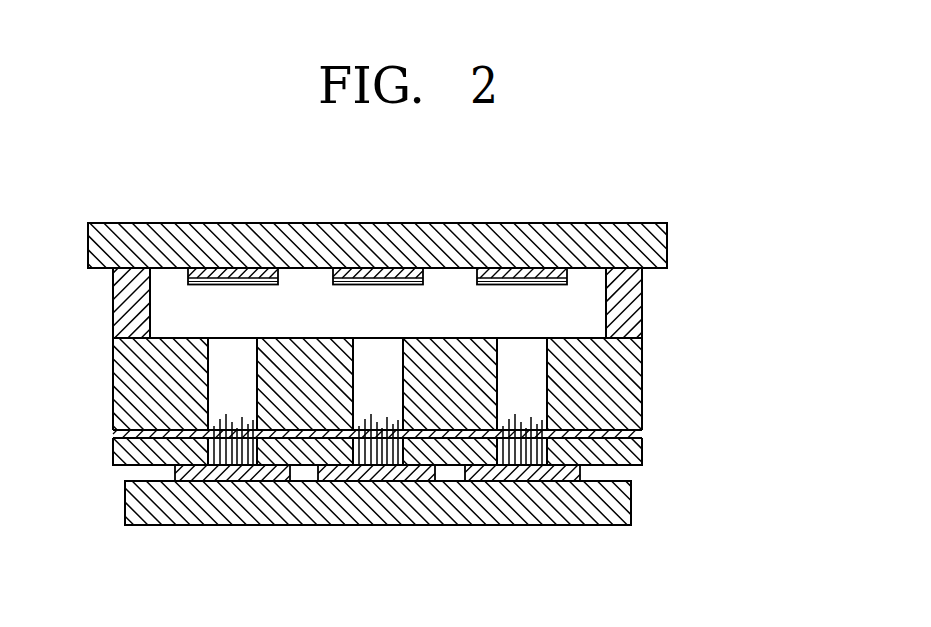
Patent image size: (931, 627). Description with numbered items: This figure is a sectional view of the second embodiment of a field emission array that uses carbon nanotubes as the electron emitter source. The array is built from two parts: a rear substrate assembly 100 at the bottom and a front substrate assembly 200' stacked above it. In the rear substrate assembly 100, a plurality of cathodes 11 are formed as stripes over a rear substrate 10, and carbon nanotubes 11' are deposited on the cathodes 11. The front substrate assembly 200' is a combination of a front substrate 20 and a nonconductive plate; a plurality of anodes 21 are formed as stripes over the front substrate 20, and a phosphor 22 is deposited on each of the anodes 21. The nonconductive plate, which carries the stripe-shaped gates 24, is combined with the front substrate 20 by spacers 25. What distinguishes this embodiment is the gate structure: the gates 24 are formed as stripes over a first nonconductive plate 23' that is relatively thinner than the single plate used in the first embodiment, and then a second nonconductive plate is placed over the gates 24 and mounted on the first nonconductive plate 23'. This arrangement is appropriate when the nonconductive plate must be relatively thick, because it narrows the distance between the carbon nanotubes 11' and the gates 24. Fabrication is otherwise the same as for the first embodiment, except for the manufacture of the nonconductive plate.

The front substrate 20 is at (665, 246).
The spacers 25 is at (632, 298).
The anodes 21 is at (277, 279).
The phosphor 22 is at (251, 283).
The gates 24 is at (637, 433).
The first nonconductive plate 23' is at (437, 453).
The cathodes 11 is at (468, 476).
The rear substrate 10 is at (625, 497).
The carbon nanotubes 11' is at (529, 519).
The front substrate assembly 200' is at (808, 346).
The rear substrate assembly 100 is at (769, 473).